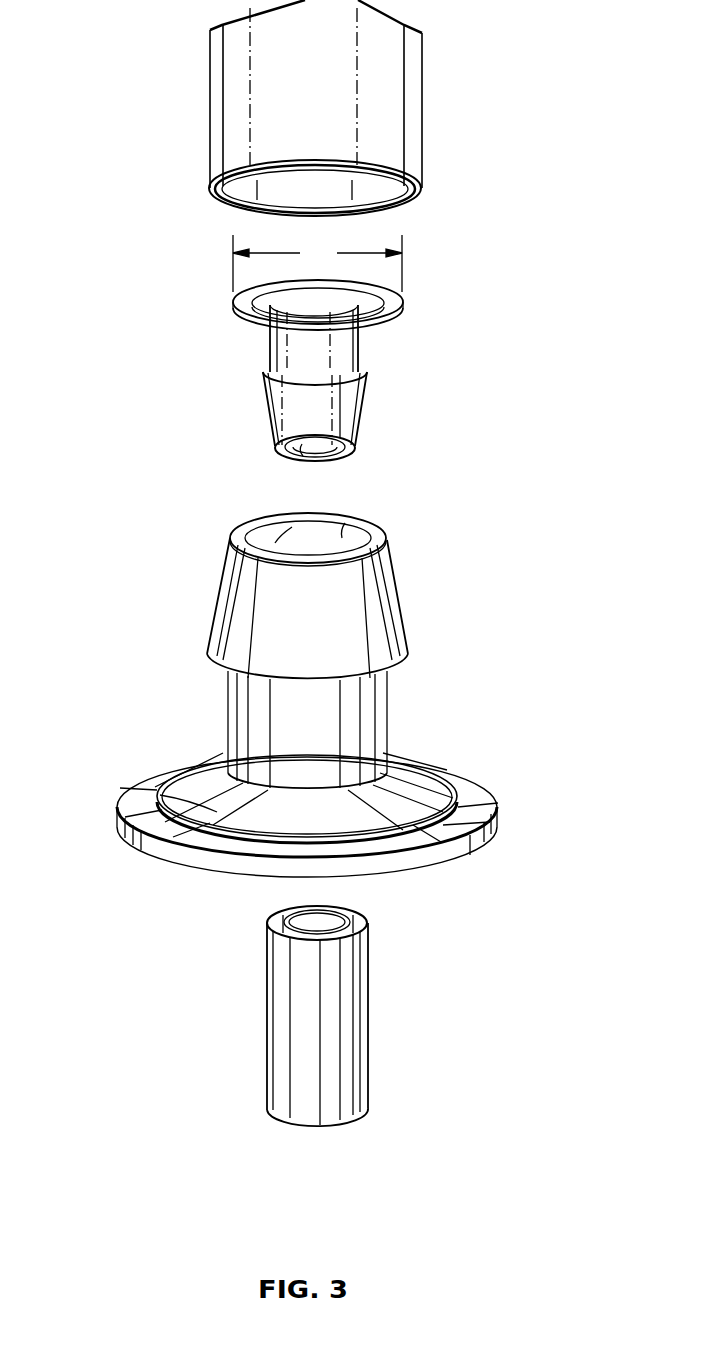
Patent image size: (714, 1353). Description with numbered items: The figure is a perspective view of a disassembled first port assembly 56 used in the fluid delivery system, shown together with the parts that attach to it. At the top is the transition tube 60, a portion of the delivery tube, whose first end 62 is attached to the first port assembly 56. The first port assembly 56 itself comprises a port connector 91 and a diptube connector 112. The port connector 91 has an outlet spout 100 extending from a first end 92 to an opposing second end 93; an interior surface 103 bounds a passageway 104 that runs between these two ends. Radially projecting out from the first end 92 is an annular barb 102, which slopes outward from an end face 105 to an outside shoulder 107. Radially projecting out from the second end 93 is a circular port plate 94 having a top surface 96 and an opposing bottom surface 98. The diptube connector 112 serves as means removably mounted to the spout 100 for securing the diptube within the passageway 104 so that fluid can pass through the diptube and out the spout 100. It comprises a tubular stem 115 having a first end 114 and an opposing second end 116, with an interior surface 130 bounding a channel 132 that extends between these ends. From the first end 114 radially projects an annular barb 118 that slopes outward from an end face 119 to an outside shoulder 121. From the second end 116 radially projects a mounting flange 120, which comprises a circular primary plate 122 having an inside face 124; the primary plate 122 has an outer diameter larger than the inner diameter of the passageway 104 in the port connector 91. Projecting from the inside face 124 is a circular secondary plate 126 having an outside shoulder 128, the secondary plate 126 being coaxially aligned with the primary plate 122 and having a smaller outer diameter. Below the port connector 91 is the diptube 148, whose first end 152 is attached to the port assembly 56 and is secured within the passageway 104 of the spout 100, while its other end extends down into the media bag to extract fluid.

The first port assembly 56 is at (602, 820).
The transition tube 60 is at (422, 73).
The first end 62 is at (422, 165).
The port connector 91 is at (468, 710).
The first end 92 is at (245, 582).
The second end 93 is at (262, 768).
The circular port plate 94 is at (473, 808).
The top surface 96 is at (122, 816).
The bottom surface 98 is at (413, 868).
The outlet spout 100 is at (233, 697).
The annular barb 102 is at (378, 638).
The interior surface 103 is at (292, 513).
The passageway 104 is at (362, 515).
The end face 105 is at (388, 539).
The outside shoulder 107 is at (397, 665).
The diptube connector 112 is at (418, 378).
The first end 114 is at (363, 438).
The tubular stem 115 is at (280, 350).
The second end 116 is at (250, 332).
The annular barb 118 is at (263, 383).
The end face 119 is at (273, 455).
The mounting flange 120 is at (404, 303).
The outside shoulder 121 is at (370, 383).
The circular primary plate 122 is at (234, 293).
The inside face 124 is at (243, 320).
The circular secondary plate 126 is at (400, 333).
The outside shoulder 128 is at (378, 347).
The interior surface 130 is at (318, 452).
The channel 132 is at (303, 452).
The diptube 148 is at (363, 1100).
The first end 152 is at (333, 975).